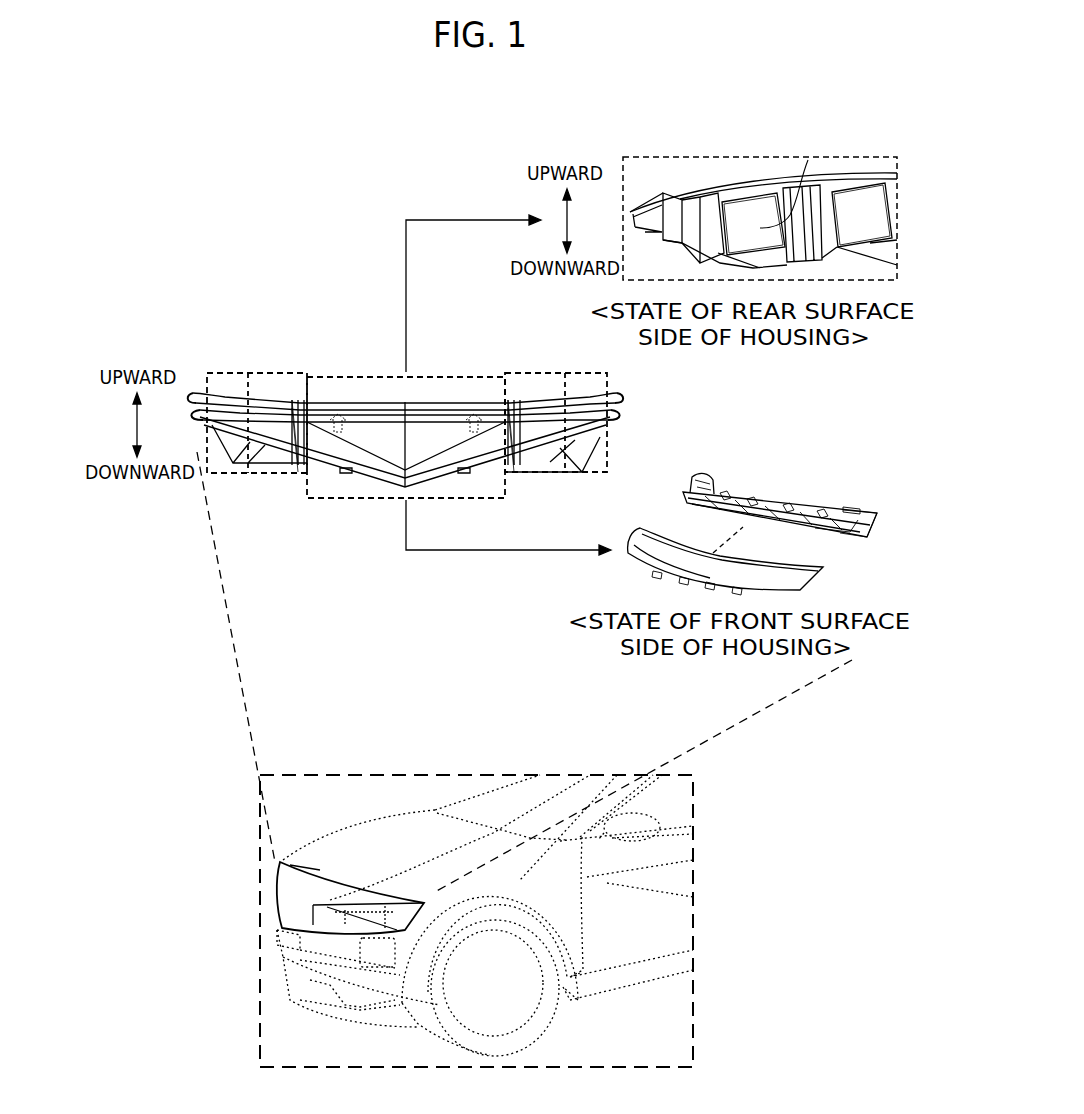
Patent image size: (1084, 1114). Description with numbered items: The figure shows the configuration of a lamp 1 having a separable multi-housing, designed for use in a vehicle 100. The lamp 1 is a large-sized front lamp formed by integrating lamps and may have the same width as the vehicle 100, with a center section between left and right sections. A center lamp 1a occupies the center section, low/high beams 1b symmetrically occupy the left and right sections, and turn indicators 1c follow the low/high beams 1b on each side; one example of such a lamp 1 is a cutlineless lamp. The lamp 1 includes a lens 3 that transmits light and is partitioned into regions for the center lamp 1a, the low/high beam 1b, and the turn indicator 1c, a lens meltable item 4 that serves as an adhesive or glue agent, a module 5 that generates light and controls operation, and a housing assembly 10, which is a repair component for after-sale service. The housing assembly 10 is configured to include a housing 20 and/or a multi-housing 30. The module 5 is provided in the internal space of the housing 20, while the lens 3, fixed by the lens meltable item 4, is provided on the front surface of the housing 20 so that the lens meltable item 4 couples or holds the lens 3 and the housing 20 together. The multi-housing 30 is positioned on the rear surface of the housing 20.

The lamp 1 is at (290, 905).
The center lamp 1a is at (346, 500).
The low/high beams 1b is at (290, 373).
The turn indicators 1c is at (230, 372).
The lens 3 is at (640, 548).
The lens meltable item 4 is at (730, 493).
The module 5 is at (808, 160).
The housing assembly 10 is at (683, 104).
The housing 20 is at (708, 197).
The multi-housing 30 is at (750, 192).
The vehicle 100 is at (390, 838).